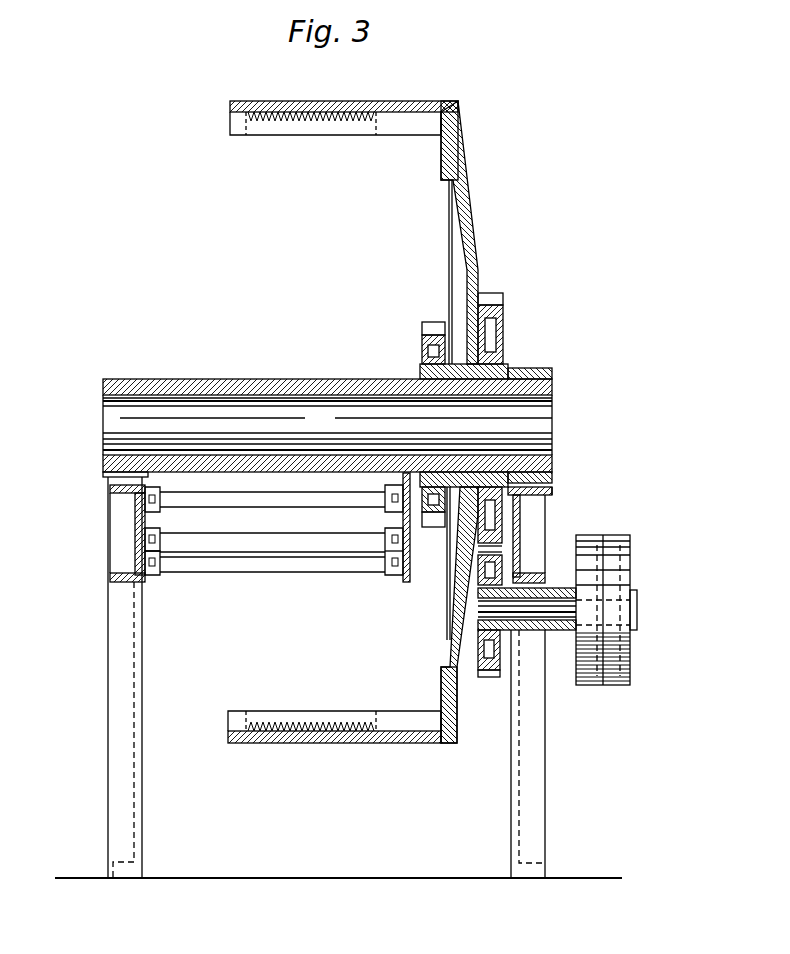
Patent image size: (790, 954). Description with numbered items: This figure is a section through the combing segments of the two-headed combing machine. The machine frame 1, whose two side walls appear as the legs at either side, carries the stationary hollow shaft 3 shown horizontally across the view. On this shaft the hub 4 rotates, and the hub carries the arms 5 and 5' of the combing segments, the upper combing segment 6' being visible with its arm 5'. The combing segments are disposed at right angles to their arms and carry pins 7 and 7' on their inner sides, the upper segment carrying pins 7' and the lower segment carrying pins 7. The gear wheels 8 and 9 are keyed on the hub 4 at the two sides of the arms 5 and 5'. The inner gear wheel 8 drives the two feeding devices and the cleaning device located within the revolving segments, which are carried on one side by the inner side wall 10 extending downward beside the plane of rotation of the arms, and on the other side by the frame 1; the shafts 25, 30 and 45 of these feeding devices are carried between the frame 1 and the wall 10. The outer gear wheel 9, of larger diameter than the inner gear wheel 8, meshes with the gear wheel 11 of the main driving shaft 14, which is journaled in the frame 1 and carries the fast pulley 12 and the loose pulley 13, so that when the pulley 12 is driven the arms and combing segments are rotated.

The machine frame 1 is at (113, 675).
The stationary hollow shaft 3 is at (283, 380).
The hub 4 is at (508, 368).
The arm 5 is at (465, 615).
The arm 5' is at (470, 232).
The combing segment 6' is at (343, 419).
The pins 7 is at (311, 698).
The pins 7' is at (311, 139).
The inner gear wheel 8 is at (422, 330).
The outer gear wheel 9 is at (500, 315).
The inner side wall 10 is at (400, 580).
The gear wheel 11 is at (500, 575).
The fast pulley 12 is at (576, 686).
The loose pulley 13 is at (630, 672).
The main driving shaft 14 is at (530, 612).
The shaft 25 is at (238, 542).
The shaft 30 is at (236, 567).
The shaft 45 is at (232, 503).